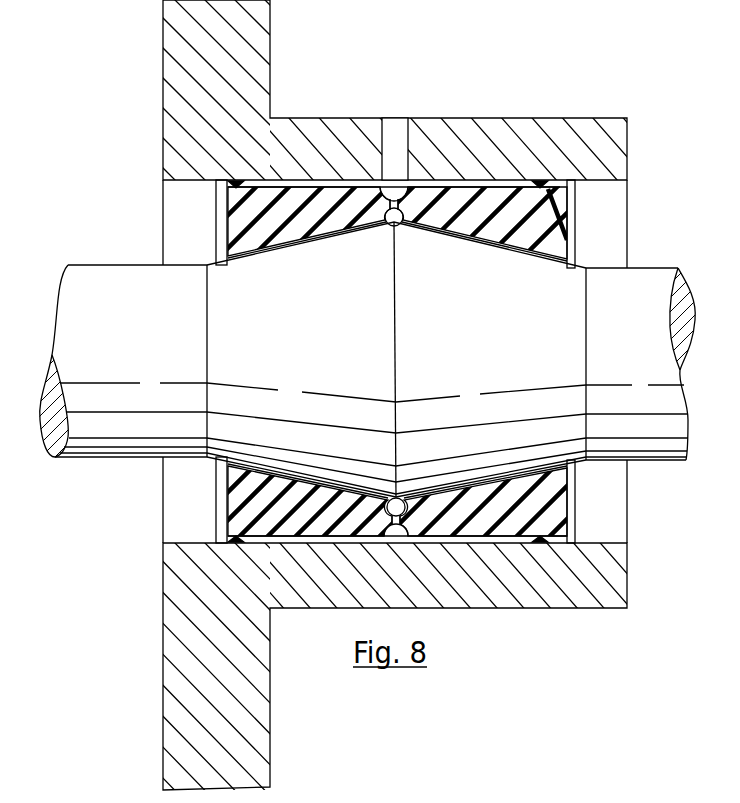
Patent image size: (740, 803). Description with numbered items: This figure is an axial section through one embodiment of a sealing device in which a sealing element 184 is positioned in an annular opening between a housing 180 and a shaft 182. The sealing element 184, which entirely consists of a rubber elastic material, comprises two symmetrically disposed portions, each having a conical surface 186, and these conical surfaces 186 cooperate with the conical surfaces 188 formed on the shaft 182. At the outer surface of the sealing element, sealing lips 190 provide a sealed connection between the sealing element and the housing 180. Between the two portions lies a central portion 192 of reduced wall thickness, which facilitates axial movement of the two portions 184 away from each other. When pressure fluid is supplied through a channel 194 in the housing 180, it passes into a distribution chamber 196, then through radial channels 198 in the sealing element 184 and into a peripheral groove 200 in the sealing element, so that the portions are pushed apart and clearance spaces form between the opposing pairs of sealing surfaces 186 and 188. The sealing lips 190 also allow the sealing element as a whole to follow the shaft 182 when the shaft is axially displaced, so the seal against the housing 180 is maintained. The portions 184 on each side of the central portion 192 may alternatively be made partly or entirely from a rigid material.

The housing 180 is at (312, 132).
The shaft 182 is at (160, 367).
The sealing element 184 is at (467, 233).
The conical surface 186 is at (310, 243).
The conical surface 188 is at (319, 367).
The sealing lip 190 is at (222, 192).
The central portion 192 is at (385, 210).
The channel 194 is at (401, 122).
The distribution chamber 196 is at (460, 185).
The radial channel 198 is at (402, 228).
The peripheral groove 200 is at (393, 220).